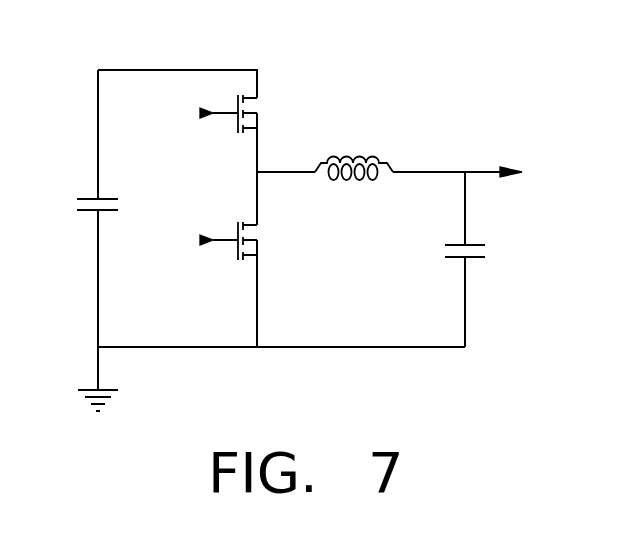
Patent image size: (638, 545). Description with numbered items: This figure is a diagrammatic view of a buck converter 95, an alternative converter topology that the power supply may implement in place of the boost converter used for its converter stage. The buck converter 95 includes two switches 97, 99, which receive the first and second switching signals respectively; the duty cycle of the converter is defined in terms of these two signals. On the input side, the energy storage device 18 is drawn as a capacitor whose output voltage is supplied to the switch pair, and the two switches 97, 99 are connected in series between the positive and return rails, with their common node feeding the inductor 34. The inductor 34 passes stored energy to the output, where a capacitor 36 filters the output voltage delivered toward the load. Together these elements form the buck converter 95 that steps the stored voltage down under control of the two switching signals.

The energy storage device 18 is at (88, 199).
The inductor 34 is at (354, 163).
The capacitor 36 is at (475, 245).
The buck converter 95 is at (458, 98).
The switch 97 is at (258, 102).
The switch 99 is at (258, 232).